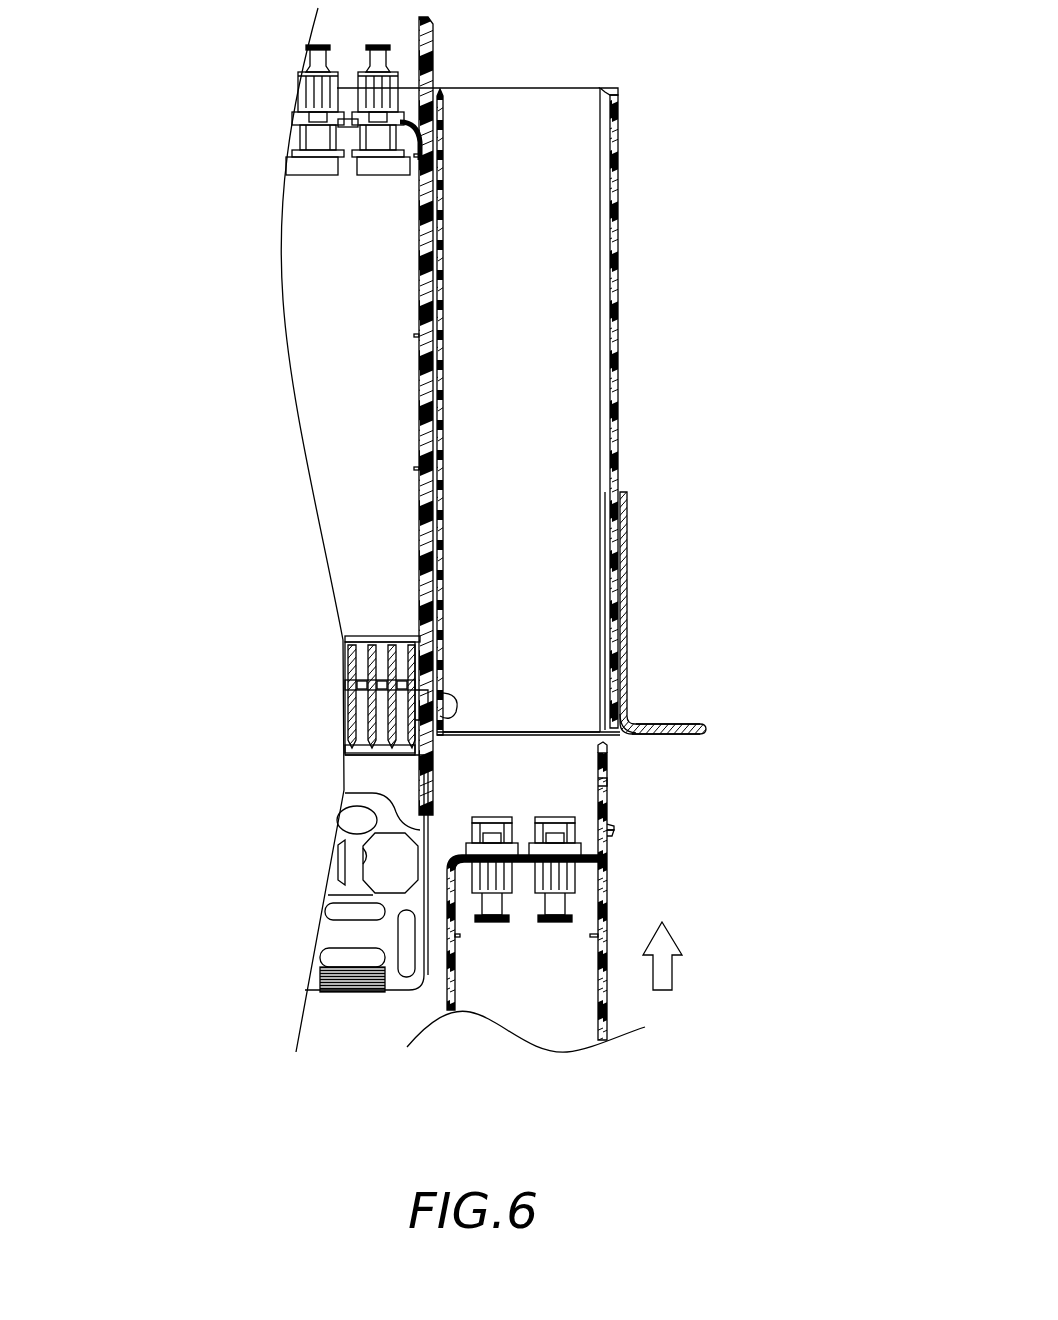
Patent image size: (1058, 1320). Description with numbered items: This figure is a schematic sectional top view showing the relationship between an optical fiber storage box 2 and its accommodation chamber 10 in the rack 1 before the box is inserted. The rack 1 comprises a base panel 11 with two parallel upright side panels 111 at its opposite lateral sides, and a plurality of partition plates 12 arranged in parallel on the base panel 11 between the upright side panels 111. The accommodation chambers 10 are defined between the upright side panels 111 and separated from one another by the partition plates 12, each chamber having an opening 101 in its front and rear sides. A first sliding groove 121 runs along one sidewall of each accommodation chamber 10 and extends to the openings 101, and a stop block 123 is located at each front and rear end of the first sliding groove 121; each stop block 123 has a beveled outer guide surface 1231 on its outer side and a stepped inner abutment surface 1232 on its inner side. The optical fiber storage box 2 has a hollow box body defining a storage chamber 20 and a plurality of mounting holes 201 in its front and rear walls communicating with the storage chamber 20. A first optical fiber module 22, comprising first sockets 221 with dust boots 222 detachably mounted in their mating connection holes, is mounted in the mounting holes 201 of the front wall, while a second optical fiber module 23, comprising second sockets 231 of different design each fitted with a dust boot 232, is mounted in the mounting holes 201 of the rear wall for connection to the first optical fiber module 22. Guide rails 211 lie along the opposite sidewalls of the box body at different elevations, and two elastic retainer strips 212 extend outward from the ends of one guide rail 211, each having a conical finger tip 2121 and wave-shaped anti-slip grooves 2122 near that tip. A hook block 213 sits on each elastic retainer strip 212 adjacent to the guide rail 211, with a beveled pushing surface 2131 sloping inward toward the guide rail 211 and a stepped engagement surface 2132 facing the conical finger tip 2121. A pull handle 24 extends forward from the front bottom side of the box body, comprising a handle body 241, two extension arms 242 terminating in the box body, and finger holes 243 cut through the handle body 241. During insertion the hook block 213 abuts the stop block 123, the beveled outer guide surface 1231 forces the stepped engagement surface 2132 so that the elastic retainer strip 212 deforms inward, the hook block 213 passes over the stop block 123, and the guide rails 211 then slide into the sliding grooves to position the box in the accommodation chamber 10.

The rack 1 is at (636, 234).
The accommodation chamber 10 is at (518, 688).
The base panel 11 is at (578, 290).
The upright side panel 111 is at (622, 373).
The partition plate 12 is at (616, 630).
The first sliding groove 121 is at (606, 590).
The stop block 123 is at (607, 90).
The beveled outer guide surface 1231 is at (620, 720).
The stepped inner abutment surface 1232 is at (622, 712).
The optical fiber storage box 2 is at (278, 443).
The storage chamber 20 is at (350, 346).
The mounting hole 201 is at (298, 153).
The first optical fiber module 22 is at (343, 704).
The first socket 221 is at (347, 690).
The dust boot 222 is at (368, 738).
The second optical fiber module 23 is at (296, 102).
The second socket 231 is at (298, 113).
The dust boot 232 is at (332, 64).
The pull handle 24 is at (352, 1018).
The handle body 241 is at (333, 938).
The extension arm 242 is at (422, 764).
The finger hole 243 is at (368, 852).
The opening 101 is at (448, 698).
The guide rail 211 is at (604, 1016).
The elastic retainer strip 212 is at (605, 812).
The conical finger tip 2121 is at (606, 750).
The wave-shaped anti-slip groove 2122 is at (608, 782).
The hook block 213 is at (612, 838).
The beveled pushing surface 2131 is at (614, 834).
The stepped engagement surface 2132 is at (614, 827).